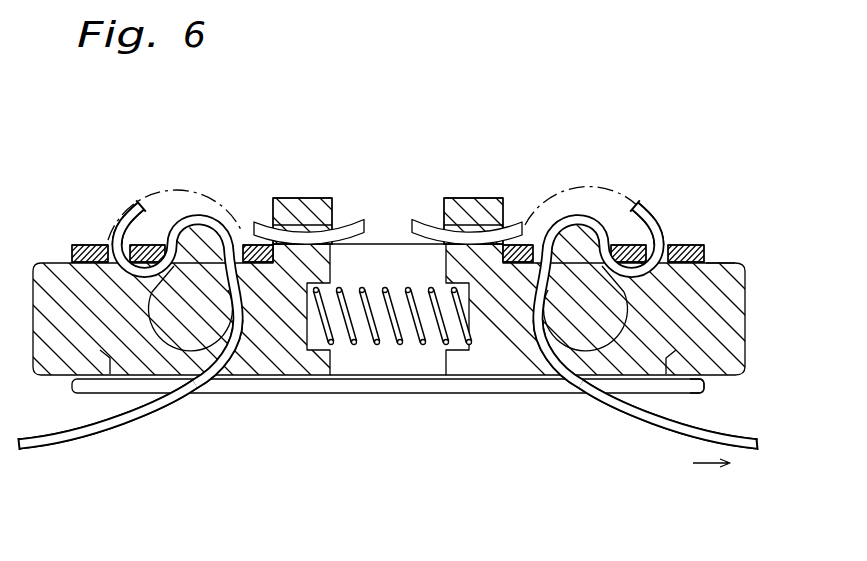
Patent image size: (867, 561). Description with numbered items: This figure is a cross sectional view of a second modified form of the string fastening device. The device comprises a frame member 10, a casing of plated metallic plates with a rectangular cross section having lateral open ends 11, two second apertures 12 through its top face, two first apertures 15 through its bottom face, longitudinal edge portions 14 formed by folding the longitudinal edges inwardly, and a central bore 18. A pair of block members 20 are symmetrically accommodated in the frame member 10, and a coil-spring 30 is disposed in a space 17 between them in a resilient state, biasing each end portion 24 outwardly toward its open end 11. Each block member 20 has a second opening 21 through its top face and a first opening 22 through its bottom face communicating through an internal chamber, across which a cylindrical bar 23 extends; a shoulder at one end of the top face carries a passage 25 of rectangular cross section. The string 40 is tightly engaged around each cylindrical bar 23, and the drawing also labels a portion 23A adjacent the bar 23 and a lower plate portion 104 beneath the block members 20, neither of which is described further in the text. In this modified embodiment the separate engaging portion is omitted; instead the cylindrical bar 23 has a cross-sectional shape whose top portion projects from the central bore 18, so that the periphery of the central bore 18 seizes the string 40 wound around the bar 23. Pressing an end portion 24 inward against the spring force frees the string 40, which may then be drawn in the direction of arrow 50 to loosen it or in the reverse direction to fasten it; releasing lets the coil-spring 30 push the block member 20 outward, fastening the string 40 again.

The frame member 10 is at (100, 278).
The lateral open end 11 is at (713, 262).
The second aperture 12 is at (116, 213).
The longitudinal edge portion 14 is at (424, 434).
The first aperture 15 is at (184, 378).
The space 17 is at (375, 362).
The central bore 18 is at (381, 257).
The block member 20 is at (433, 288).
The second opening 21 is at (80, 282).
The first opening 22 is at (197, 334).
The cylindrical bar 23 is at (206, 392).
The wire tail portion 23A is at (120, 313).
The end portion 24 is at (746, 372).
The passage 25 is at (290, 222).
The coil-spring 30 is at (404, 340).
The string 40 is at (660, 433).
The arrow 50 is at (733, 469).
The base plate end 104 is at (703, 384).